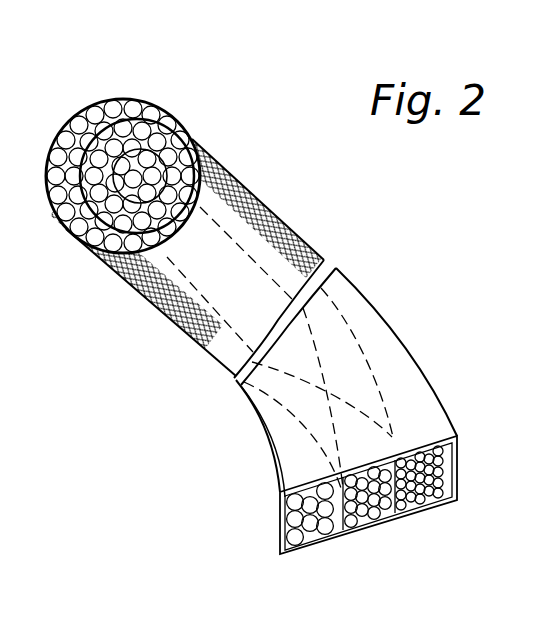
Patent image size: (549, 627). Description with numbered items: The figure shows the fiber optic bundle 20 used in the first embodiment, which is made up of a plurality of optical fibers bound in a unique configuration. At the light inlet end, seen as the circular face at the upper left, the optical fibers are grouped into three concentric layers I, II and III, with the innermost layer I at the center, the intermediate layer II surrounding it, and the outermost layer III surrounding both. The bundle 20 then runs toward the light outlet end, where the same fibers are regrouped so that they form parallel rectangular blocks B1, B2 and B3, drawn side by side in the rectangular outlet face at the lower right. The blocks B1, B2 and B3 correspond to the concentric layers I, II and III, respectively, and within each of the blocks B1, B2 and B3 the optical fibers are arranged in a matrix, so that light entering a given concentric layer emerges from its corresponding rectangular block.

The fiber optic bundle 20 is at (158, 310).
The third concentric layer III is at (124, 99).
The second concentric layer II is at (158, 122).
The first concentric layer I is at (150, 165).
The first rectangular block B1 is at (330, 538).
The second rectangular block B2 is at (377, 520).
The third rectangular block B3 is at (430, 508).